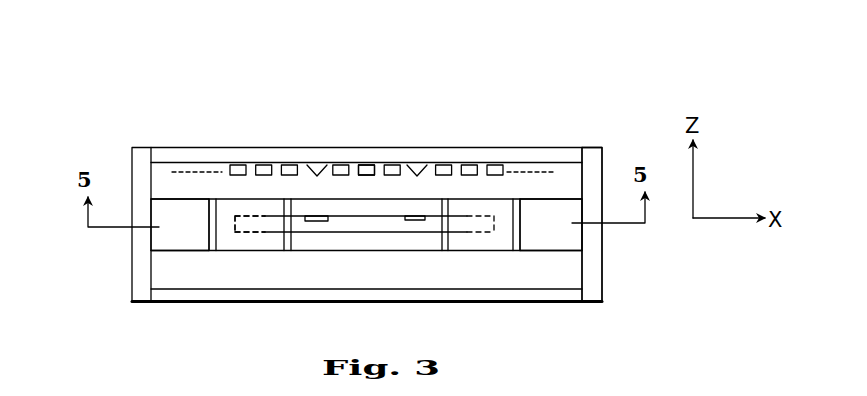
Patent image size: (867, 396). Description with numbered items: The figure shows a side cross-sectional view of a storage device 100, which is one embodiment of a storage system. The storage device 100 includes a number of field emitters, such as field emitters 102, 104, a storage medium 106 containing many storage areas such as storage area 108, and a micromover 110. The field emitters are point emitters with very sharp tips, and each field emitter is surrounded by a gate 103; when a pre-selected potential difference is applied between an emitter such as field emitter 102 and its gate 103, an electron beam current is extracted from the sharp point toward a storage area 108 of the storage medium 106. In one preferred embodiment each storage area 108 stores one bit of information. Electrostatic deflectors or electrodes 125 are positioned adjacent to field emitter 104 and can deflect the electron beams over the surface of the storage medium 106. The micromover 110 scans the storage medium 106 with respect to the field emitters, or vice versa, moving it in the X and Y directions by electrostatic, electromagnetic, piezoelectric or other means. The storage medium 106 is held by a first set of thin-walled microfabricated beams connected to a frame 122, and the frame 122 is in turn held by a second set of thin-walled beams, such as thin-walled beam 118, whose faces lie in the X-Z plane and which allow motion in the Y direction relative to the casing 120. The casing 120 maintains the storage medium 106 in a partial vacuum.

The storage device 100 is at (97, 137).
The field emitter 102 is at (318, 165).
The gate 103 is at (300, 165).
The field emitter 104 is at (417, 166).
The electrodes 125 is at (370, 165).
The storage area 108 is at (314, 216).
The frame 122 is at (514, 212).
The thin-walled beam 118 is at (565, 223).
The micromover 110 is at (186, 251).
The storage medium 106 is at (236, 234).
The casing 120 is at (590, 273).